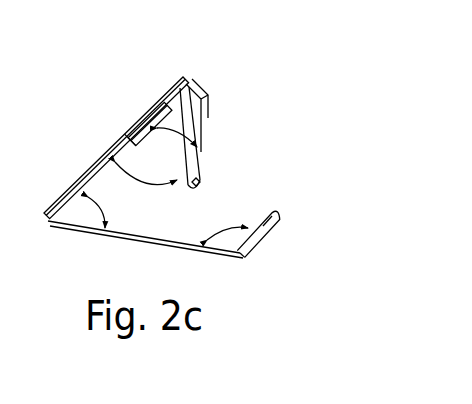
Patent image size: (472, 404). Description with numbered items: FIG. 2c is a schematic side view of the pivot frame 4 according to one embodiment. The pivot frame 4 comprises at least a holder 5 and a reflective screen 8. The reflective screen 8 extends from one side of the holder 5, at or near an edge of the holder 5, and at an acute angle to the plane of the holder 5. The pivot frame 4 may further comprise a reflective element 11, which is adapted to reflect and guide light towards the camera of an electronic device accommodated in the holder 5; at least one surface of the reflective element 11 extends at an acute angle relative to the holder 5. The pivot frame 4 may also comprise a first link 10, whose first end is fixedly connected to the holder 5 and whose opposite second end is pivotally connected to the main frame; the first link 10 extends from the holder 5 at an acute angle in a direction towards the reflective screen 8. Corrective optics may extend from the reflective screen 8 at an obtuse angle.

The pivot frame 4 is at (246, 156).
The holder 5 is at (91, 168).
The reflective screen 8 is at (148, 246).
The first link 10 is at (167, 108).
The reflective element 11 is at (208, 94).